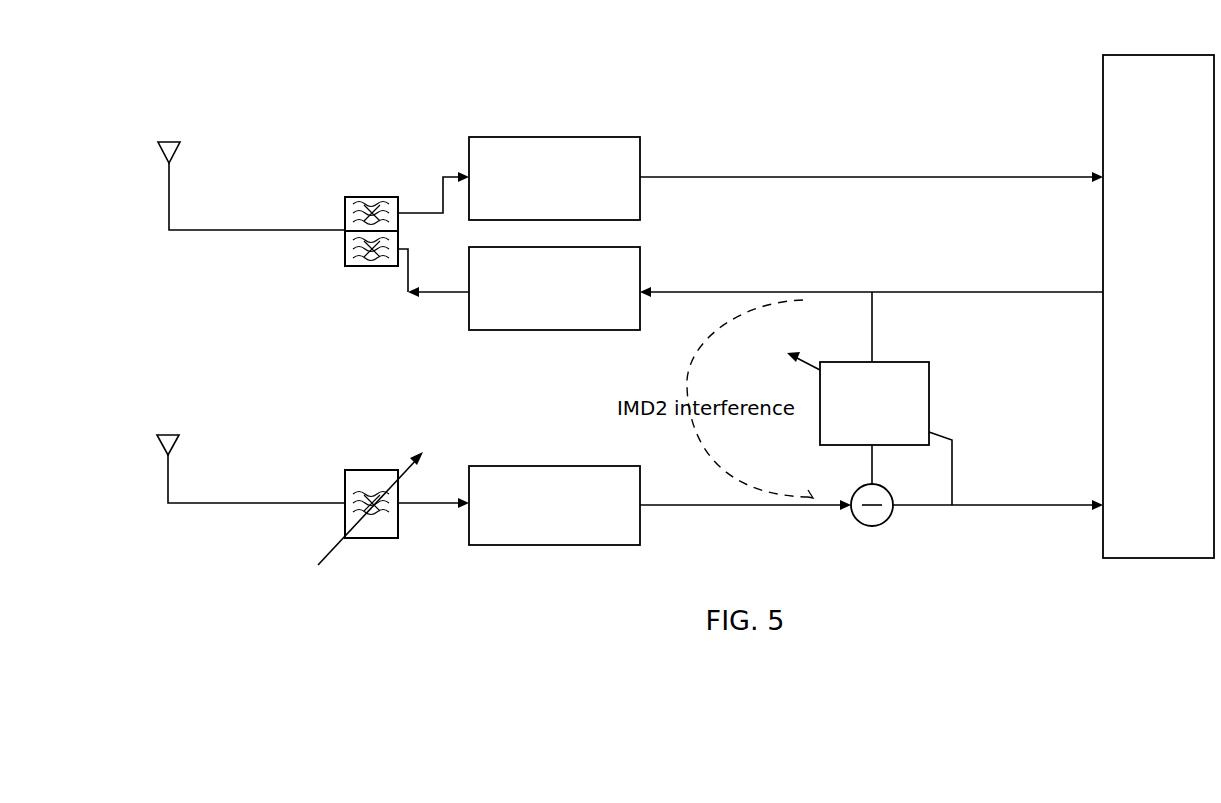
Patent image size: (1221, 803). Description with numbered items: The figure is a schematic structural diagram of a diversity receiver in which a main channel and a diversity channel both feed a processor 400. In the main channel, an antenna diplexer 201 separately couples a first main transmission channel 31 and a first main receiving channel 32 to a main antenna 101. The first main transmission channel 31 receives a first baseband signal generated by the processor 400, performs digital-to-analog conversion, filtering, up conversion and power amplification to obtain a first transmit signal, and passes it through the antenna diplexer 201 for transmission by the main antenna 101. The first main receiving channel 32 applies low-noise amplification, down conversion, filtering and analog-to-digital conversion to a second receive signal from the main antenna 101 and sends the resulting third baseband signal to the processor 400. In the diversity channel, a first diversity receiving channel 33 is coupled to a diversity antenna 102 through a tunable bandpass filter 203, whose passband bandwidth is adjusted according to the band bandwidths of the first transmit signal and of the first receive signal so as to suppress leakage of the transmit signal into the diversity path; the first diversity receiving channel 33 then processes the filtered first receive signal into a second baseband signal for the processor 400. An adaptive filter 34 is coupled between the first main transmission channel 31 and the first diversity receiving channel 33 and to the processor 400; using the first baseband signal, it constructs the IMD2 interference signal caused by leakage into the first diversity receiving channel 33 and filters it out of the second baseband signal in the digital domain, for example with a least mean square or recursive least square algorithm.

The main antenna 101 is at (170, 188).
The diversity antenna 102 is at (167, 480).
The antenna diplexer 201 is at (345, 238).
The tunable bandpass filter 203 is at (397, 542).
The first main transmission channel 31 is at (517, 330).
The first main receiving channel 32 is at (550, 137).
The first diversity receiving channel 33 is at (507, 545).
The adaptive filter 34 is at (897, 362).
The processor 400 is at (1167, 558).